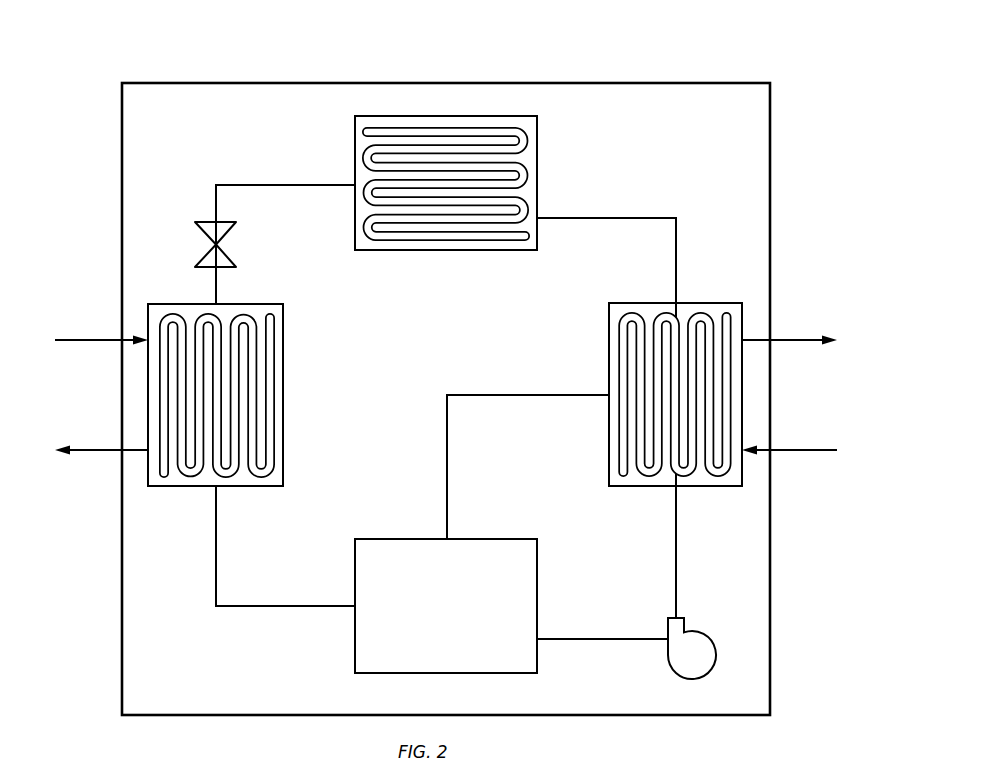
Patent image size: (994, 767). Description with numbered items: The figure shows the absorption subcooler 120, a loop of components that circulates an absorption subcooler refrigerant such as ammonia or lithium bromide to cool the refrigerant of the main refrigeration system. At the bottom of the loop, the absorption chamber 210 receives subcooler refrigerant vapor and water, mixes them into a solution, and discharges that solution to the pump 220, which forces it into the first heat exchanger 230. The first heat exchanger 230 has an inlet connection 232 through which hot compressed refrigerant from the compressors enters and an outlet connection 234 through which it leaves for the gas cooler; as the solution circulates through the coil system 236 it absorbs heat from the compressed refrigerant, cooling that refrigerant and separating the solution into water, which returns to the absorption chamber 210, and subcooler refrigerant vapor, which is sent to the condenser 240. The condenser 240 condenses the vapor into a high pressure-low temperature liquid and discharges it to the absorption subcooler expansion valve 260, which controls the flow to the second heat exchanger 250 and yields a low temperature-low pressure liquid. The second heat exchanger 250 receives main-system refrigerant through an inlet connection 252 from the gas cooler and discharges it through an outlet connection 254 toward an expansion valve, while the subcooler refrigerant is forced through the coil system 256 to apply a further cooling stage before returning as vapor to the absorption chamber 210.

The absorption subcooler 120 is at (682, 43).
The absorption chamber 210 is at (537, 585).
The pump 220 is at (666, 653).
The first heat exchanger 230 is at (657, 381).
The inlet connection 232 is at (790, 442).
The outlet connection 234 is at (790, 330).
The coil system 236 is at (617, 350).
The condenser 240 is at (540, 128).
The second heat exchanger 250 is at (248, 395).
The inlet connection 252 is at (101, 331).
The outlet connection 254 is at (101, 440).
The coil system 256 is at (272, 388).
The absorption subcooler expansion valve 260 is at (218, 243).